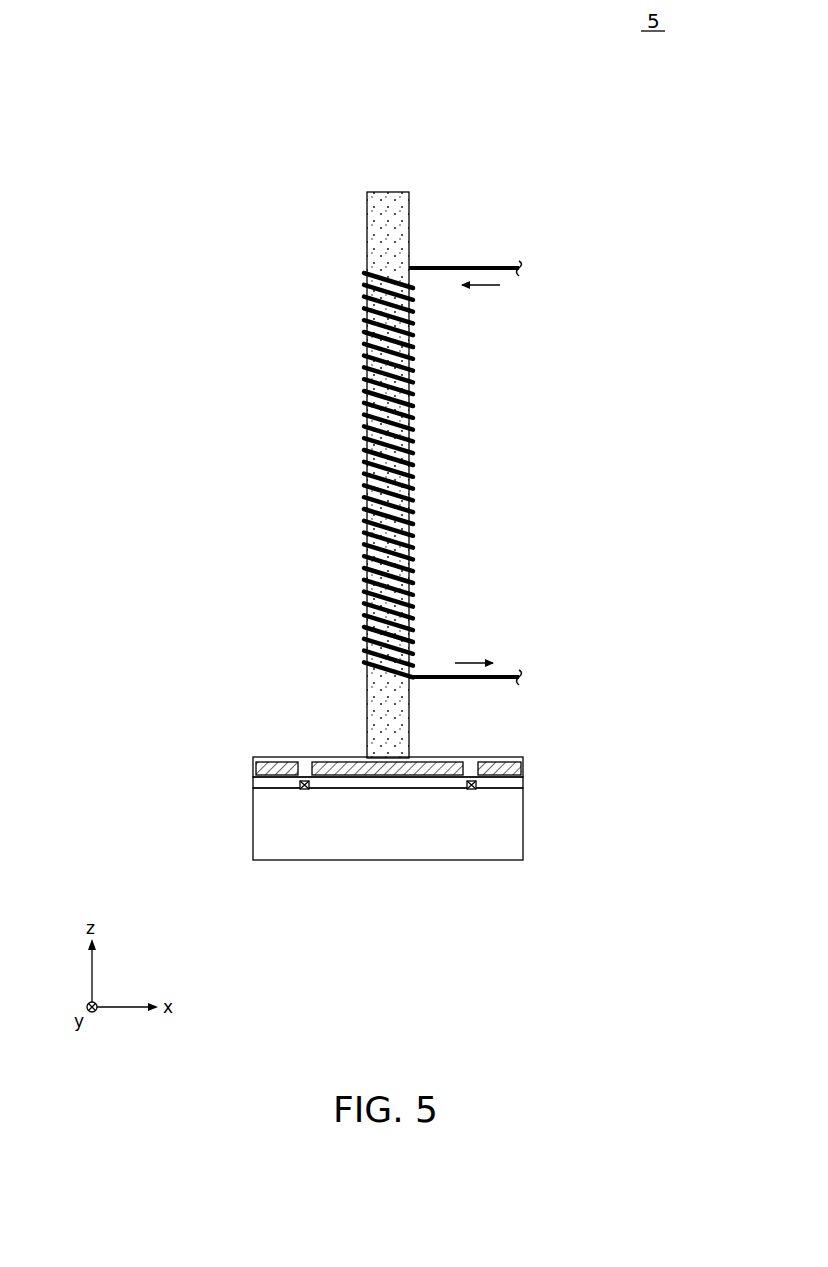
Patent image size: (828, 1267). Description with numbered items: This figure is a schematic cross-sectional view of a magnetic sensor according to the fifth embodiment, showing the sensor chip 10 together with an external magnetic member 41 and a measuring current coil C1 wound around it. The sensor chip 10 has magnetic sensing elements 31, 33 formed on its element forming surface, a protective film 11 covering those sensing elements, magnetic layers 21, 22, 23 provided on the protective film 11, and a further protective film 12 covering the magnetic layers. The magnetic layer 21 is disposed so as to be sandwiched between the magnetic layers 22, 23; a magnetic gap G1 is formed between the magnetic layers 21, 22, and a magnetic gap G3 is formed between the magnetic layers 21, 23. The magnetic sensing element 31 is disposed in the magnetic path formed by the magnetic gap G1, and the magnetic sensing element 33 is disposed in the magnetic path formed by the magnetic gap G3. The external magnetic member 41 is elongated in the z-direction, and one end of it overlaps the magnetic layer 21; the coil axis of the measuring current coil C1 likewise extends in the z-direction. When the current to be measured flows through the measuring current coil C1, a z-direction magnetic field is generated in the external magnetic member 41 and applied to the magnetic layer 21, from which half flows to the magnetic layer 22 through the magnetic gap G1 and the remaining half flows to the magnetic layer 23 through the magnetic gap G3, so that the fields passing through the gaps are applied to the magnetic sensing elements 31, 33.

The sensor chip 10 is at (512, 826).
The protective film 11 is at (510, 784).
The protective film 12 is at (513, 762).
The magnetic layer 21 is at (338, 762).
The magnetic layer 22 is at (280, 762).
The magnetic layer 23 is at (498, 762).
The magnetic sensing element 31 is at (305, 790).
The magnetic sensing element 33 is at (472, 790).
The external magnetic member 41 is at (378, 230).
The measuring current coil C1 is at (368, 503).
The magnetic gap G1 is at (306, 752).
The magnetic gap G3 is at (471, 752).